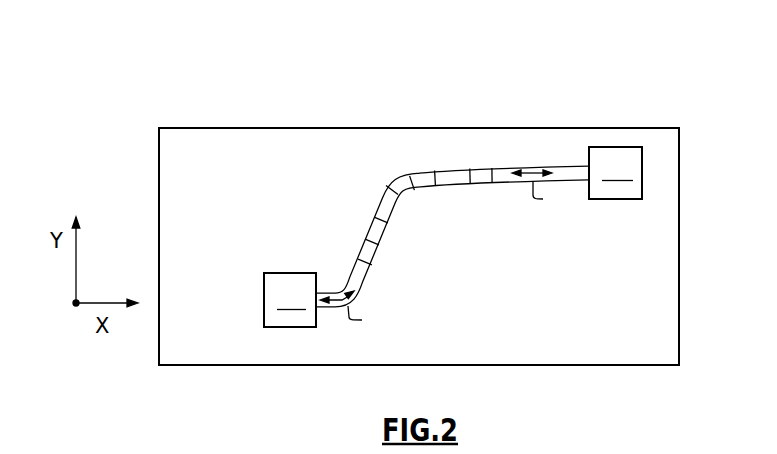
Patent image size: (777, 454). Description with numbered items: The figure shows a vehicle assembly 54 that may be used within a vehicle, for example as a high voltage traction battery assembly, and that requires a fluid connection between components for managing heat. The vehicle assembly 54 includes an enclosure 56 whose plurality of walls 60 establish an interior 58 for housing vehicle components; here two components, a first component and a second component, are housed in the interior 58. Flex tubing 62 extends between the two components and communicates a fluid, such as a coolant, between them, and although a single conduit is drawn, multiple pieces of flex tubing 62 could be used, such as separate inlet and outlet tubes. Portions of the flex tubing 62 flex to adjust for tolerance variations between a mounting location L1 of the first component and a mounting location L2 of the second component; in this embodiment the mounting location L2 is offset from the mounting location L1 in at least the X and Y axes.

The vehicle assembly 54 is at (440, 88).
The enclosure 56 is at (278, 120).
The interior 58 is at (489, 282).
The walls 60 is at (505, 128).
The flex tubing 62 is at (393, 180).
The mounting location of the first component L1 is at (288, 264).
The mounting location of the second component L2 is at (616, 209).